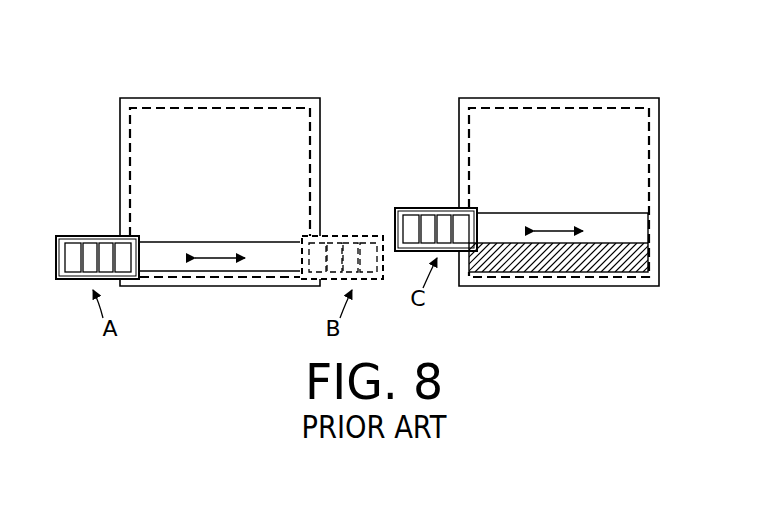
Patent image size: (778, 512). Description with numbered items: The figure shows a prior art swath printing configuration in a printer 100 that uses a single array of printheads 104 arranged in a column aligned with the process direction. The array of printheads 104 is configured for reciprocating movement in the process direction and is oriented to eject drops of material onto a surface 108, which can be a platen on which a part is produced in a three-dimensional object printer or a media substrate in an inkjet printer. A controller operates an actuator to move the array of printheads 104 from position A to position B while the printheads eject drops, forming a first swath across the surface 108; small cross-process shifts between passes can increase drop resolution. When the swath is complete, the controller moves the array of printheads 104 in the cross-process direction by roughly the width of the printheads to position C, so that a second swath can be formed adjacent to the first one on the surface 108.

The device housing 100 is at (250, 82).
The array of printheads 104 is at (90, 236).
The surface 108 is at (302, 136).